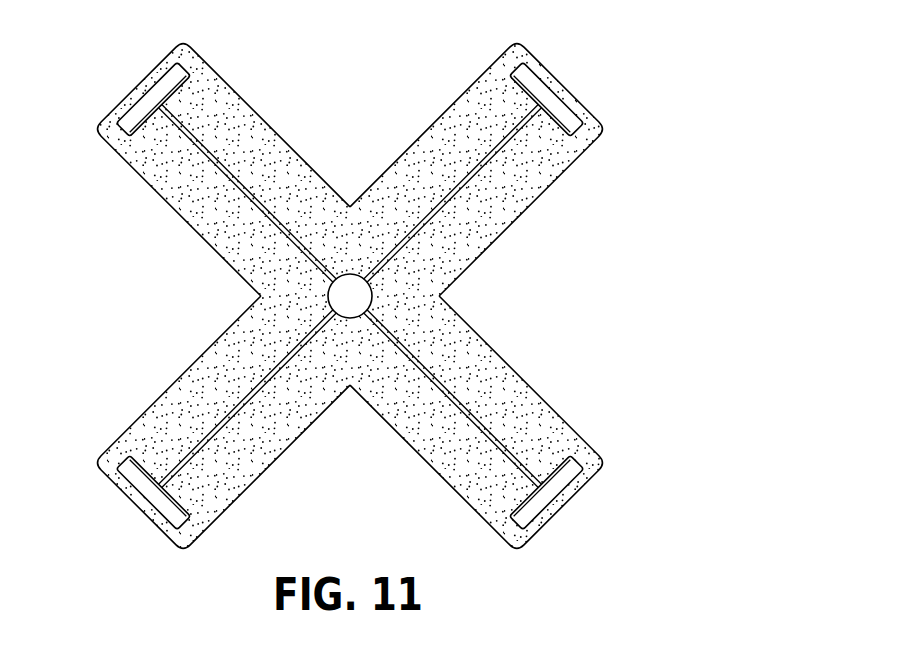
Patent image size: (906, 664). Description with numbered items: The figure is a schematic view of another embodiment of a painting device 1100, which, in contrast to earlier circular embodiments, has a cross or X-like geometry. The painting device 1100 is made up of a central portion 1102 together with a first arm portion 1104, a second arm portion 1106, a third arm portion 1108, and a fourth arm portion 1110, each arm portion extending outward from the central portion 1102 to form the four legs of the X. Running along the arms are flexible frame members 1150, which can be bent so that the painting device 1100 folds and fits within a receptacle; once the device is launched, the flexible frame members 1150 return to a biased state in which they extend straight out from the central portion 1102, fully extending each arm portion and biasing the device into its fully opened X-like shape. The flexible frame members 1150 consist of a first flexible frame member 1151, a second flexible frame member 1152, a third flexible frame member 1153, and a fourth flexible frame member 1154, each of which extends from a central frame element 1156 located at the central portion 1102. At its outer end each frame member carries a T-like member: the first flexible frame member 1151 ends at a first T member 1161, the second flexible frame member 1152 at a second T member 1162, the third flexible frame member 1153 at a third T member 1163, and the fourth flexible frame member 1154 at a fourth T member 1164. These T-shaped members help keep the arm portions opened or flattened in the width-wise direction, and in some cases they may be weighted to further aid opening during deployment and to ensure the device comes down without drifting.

The painting device 1100 is at (670, 222).
The central portion 1102 is at (392, 286).
The first arm portion 1104 is at (493, 203).
The second arm portion 1106 is at (492, 392).
The third arm portion 1108 is at (304, 420).
The fourth arm portion 1110 is at (296, 176).
The flexible frame members 1150 is at (252, 223).
The first flexible frame member 1151 is at (465, 178).
The second flexible frame member 1152 is at (466, 415).
The third flexible frame member 1153 is at (235, 416).
The fourth flexible frame member 1154 is at (235, 178).
The central frame element 1156 is at (327, 305).
The first T member 1161 is at (547, 100).
The second T member 1162 is at (549, 494).
The third T member 1163 is at (152, 493).
The fourth T member 1164 is at (152, 98).